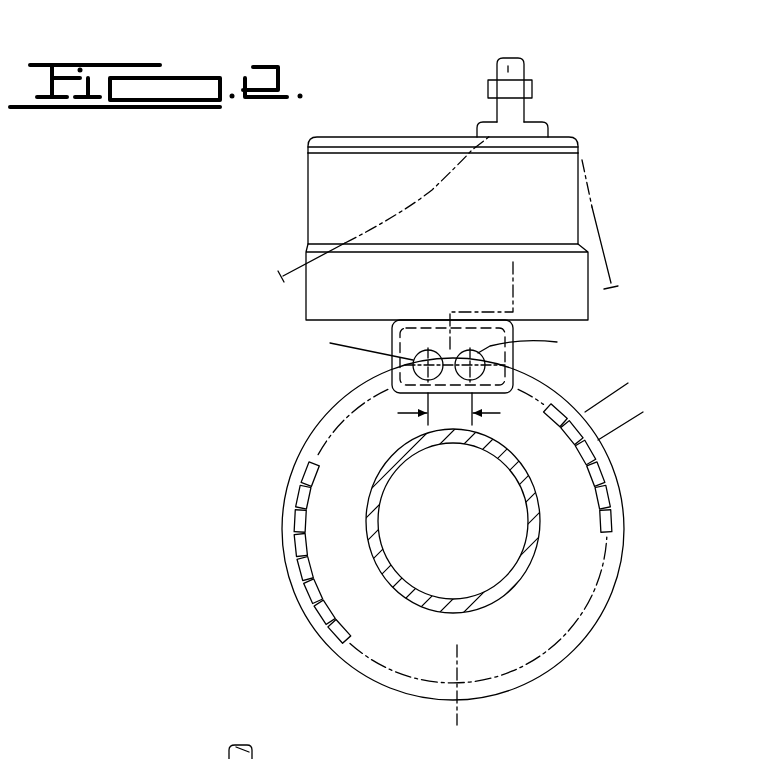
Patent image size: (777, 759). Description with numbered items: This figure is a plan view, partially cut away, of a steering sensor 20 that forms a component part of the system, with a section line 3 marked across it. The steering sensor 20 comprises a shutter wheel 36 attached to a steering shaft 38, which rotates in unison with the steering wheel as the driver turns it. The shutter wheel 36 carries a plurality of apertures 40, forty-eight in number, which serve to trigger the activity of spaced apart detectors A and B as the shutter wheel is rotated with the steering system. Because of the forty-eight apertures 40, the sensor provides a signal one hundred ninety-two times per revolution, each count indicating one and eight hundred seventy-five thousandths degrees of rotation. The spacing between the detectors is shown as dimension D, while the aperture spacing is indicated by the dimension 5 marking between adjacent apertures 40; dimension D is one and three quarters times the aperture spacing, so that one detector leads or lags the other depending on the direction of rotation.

The section line 3- 3 is at (548, 30).
The steering sensor 20 is at (654, 260).
The shutter wheel 36 is at (625, 563).
The steering shaft 38 is at (515, 552).
The apertures 40 is at (610, 473).
The slot pitch 5 is at (607, 363).